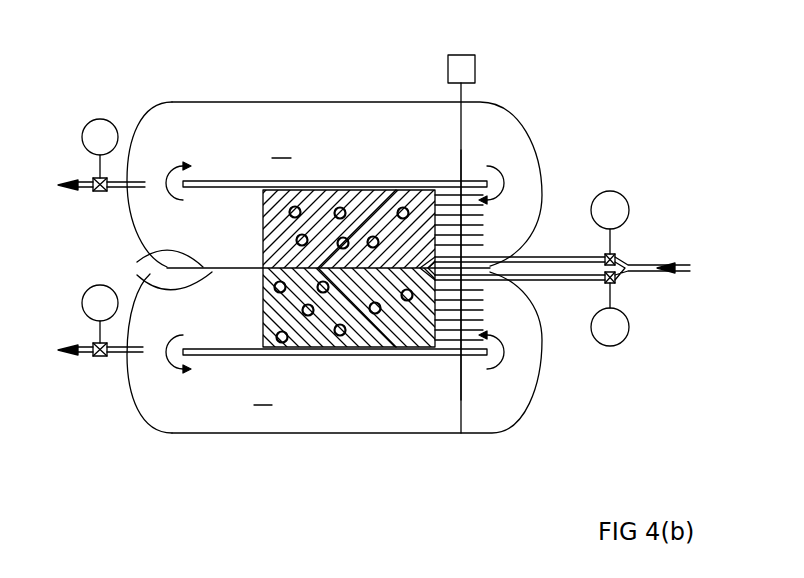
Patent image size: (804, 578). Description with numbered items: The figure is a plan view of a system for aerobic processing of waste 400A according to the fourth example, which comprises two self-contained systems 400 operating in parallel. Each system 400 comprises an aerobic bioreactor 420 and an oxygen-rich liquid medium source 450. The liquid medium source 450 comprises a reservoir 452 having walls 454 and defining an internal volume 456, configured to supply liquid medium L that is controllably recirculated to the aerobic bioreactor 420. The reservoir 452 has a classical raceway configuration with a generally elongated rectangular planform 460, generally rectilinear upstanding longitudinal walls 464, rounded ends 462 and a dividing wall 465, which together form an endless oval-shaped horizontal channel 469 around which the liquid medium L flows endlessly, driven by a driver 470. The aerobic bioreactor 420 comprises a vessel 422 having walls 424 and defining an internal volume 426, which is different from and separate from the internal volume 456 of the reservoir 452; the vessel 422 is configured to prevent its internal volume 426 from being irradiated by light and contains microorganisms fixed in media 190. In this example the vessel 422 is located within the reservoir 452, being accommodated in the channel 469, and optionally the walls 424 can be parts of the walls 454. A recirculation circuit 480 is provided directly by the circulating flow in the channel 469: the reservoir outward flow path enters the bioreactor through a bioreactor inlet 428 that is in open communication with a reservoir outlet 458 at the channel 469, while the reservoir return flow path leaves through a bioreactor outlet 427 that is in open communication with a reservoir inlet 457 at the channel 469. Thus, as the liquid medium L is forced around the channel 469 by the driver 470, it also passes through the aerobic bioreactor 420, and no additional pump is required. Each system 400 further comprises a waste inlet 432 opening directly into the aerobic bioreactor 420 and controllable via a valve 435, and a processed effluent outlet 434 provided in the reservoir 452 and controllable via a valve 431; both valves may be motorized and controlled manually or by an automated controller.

The system for aerobic processing of waste 400A is at (550, 80).
The self-contained system 400 is at (566, 158).
The media 190 is at (296, 240).
The aerobic bioreactor 420 is at (256, 229).
The vessel 422 is at (263, 212).
The walls 424 is at (282, 355).
The internal volume 426 is at (355, 200).
The bioreactor outlet 427 is at (145, 383).
The bioreactor inlet 428 is at (447, 357).
The valve 431 is at (95, 180).
The waste inlet 432 is at (565, 256).
The processed effluent outlet 434 is at (127, 180).
The valve 435 is at (615, 254).
The oxygen-rich liquid medium source 450 is at (332, 92).
The reservoir 452 is at (250, 102).
The walls 454 is at (297, 102).
The internal volume 456 is at (395, 127).
The reservoir inlet 457 is at (95, 437).
The reservoir outlet 458 is at (520, 445).
The planform 460 is at (173, 102).
The rounded ends 462 is at (130, 200).
The longitudinal walls 464 is at (148, 268).
The dividing wall 465 is at (200, 195).
The channel 469 is at (203, 123).
The driver 470 is at (493, 175).
The recirculation circuit 480 is at (490, 170).